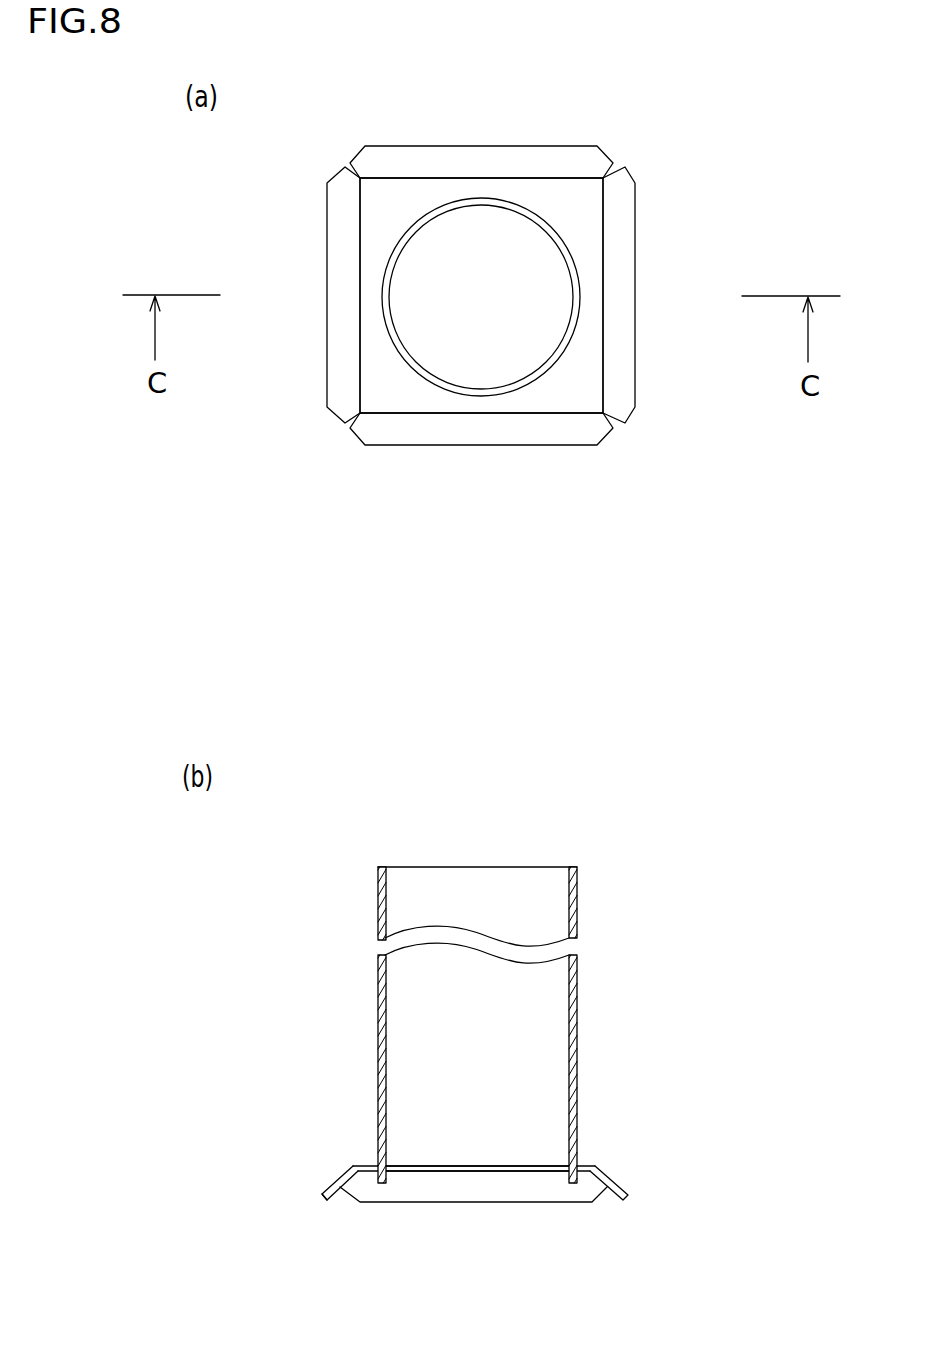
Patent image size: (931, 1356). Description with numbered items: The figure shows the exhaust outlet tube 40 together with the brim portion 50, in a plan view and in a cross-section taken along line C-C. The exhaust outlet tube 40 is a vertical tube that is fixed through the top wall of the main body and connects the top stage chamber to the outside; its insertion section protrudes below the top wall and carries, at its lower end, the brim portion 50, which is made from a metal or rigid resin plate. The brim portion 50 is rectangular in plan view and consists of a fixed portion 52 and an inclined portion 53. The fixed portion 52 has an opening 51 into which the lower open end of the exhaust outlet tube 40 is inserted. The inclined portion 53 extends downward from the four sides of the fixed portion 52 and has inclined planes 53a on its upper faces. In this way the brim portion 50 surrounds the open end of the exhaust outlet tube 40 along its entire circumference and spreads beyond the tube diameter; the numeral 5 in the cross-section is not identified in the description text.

The connection portion 5 is at (475, 1167).
The exhaust outlet tube 40 is at (382, 293).
The brim portion 50 is at (672, 262).
The opening 51 is at (556, 232).
The fixed portion 52 is at (570, 387).
The inclined portion 53 is at (617, 297).
The inclined plane 53a is at (341, 1184).